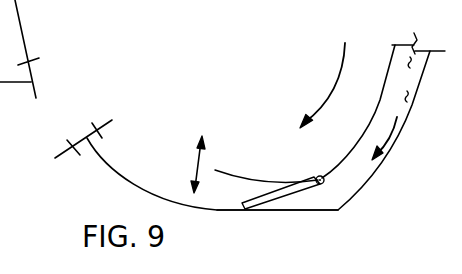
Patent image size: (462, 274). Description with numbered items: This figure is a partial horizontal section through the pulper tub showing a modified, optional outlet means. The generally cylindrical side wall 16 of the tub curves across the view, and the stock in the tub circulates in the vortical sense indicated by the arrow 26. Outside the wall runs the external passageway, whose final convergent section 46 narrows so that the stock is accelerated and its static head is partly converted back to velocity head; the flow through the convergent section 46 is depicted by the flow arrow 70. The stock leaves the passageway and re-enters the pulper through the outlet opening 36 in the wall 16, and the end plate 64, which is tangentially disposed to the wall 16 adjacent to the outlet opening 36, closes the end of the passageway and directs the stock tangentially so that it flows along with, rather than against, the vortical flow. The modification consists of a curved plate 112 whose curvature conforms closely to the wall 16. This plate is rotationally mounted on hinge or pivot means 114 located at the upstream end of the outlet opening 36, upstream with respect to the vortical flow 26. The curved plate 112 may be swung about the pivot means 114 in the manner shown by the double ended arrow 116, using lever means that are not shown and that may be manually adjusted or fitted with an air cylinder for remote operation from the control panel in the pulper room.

The side wall 16 is at (380, 106).
The arrow 26 is at (340, 72).
The outlet opening 36 is at (270, 193).
The convergent section 46 is at (409, 79).
The end plate 64 is at (300, 211).
The flow arrow 70 is at (390, 138).
The curved plate 112 is at (268, 182).
The pivot means 114 is at (319, 176).
The double ended arrow 116 is at (196, 159).